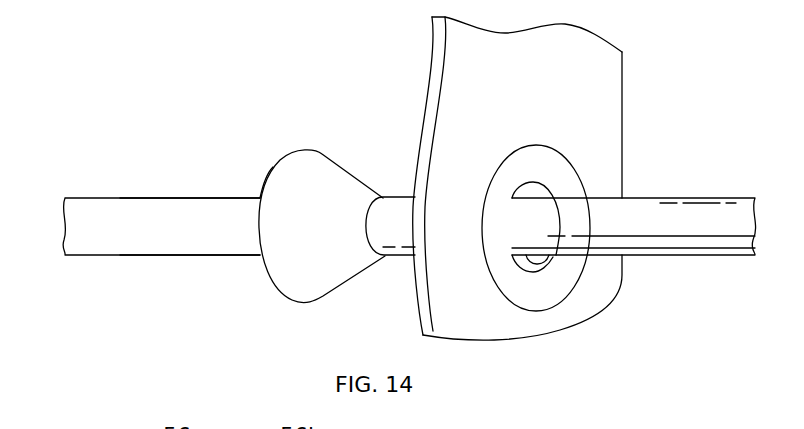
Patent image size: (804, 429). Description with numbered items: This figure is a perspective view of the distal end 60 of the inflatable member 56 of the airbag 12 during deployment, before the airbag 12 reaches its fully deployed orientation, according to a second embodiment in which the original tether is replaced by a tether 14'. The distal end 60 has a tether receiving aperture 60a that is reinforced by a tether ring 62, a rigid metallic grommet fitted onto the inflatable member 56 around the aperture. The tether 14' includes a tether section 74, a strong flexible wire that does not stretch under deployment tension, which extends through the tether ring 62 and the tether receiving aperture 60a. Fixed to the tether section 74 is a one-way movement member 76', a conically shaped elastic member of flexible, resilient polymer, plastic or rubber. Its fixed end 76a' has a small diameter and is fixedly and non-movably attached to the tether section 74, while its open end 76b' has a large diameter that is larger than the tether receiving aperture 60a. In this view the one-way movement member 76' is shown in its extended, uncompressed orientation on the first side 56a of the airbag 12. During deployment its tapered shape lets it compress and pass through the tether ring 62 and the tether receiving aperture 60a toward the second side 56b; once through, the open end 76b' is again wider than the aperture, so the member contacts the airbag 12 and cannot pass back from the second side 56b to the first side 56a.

The tether 14' is at (161, 197).
The tether section 74 is at (167, 226).
The one-way movement member 76' is at (322, 211).
The open end 76b' is at (270, 153).
The fixed end 76a' is at (385, 254).
The airbag 12 is at (571, 74).
The inflatable member 56 is at (582, 113).
The first side 56a is at (435, 83).
The second side 56b is at (482, 63).
The tether ring 62 is at (557, 172).
The distal end 60 is at (593, 295).
The tether receiving aperture 60a is at (543, 263).